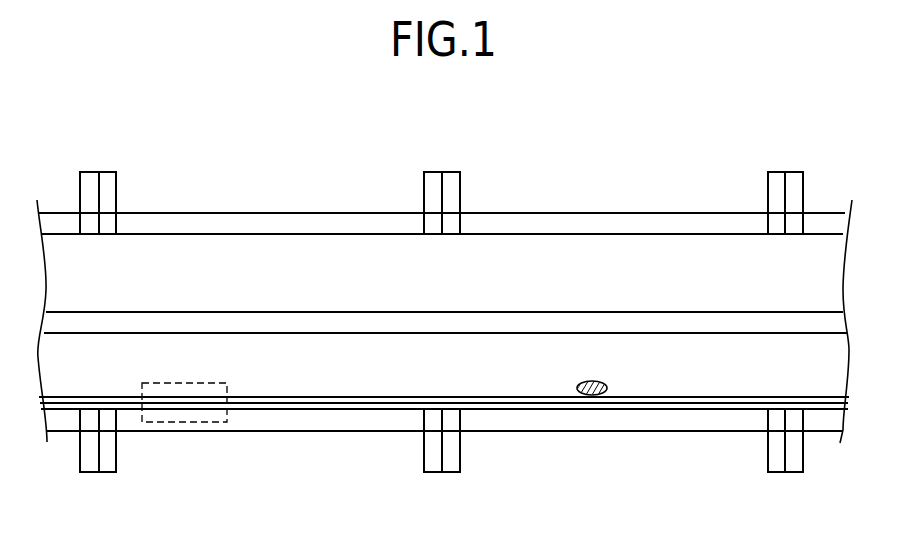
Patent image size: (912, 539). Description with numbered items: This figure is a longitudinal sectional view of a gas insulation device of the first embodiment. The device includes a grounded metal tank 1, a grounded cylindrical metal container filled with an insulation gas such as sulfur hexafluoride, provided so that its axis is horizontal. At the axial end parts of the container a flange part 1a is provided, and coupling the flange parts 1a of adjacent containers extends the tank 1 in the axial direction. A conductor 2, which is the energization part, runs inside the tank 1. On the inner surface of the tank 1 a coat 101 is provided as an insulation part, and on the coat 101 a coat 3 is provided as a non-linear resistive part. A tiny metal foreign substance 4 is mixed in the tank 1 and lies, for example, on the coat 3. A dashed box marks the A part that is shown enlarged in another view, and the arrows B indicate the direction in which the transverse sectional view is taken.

The tank 1 is at (258, 213).
The flange part 1a is at (108, 172).
The conductor 2 is at (170, 312).
The coat 3 is at (255, 400).
The coat 101 is at (323, 410).
The metal foreign substance 4 is at (590, 397).
The A part A is at (185, 422).
The arrows B- B is at (510, 123).